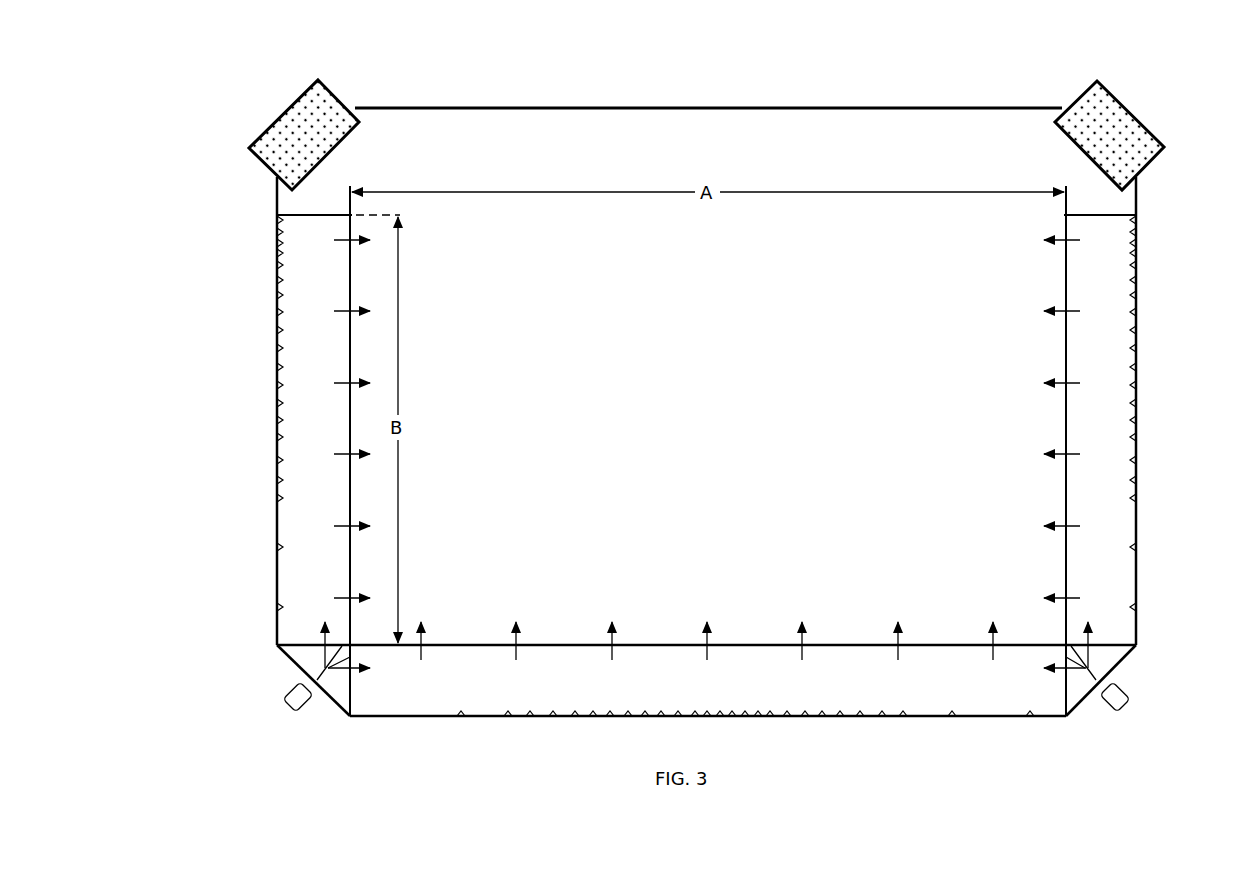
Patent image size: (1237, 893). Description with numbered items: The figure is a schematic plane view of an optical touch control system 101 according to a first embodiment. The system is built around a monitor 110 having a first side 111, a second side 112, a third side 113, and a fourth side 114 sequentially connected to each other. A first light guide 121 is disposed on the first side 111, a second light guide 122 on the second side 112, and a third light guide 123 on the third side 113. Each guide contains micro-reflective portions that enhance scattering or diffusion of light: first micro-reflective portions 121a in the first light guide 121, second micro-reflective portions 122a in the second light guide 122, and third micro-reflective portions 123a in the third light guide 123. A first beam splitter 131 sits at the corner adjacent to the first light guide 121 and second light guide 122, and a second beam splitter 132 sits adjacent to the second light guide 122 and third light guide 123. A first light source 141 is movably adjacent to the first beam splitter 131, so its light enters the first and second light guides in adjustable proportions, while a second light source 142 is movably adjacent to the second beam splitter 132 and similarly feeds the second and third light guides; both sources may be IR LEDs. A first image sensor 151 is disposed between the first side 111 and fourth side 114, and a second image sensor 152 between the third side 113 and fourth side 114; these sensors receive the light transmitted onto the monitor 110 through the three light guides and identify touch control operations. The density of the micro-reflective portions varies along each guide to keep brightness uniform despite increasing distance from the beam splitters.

The optical touch control system 101 is at (225, 72).
The monitor 110 is at (703, 416).
The first side 111 is at (276, 212).
The second side 112 is at (585, 645).
The third side 113 is at (1138, 212).
The fourth side 114 is at (538, 107).
The first light guide 121 is at (276, 472).
The first micro-reflective portions 121a is at (276, 236).
The second light guide 122 is at (928, 720).
The second micro-reflective portions 122a is at (461, 717).
The third light guide 123 is at (1138, 472).
The third micro-reflective portions 123a is at (1138, 236).
The first beam splitter 131 is at (285, 652).
The second beam splitter 132 is at (1128, 652).
The first light source 141 is at (285, 700).
The second light source 142 is at (1130, 700).
The first image sensor 151 is at (292, 112).
The second image sensor 152 is at (1123, 112).